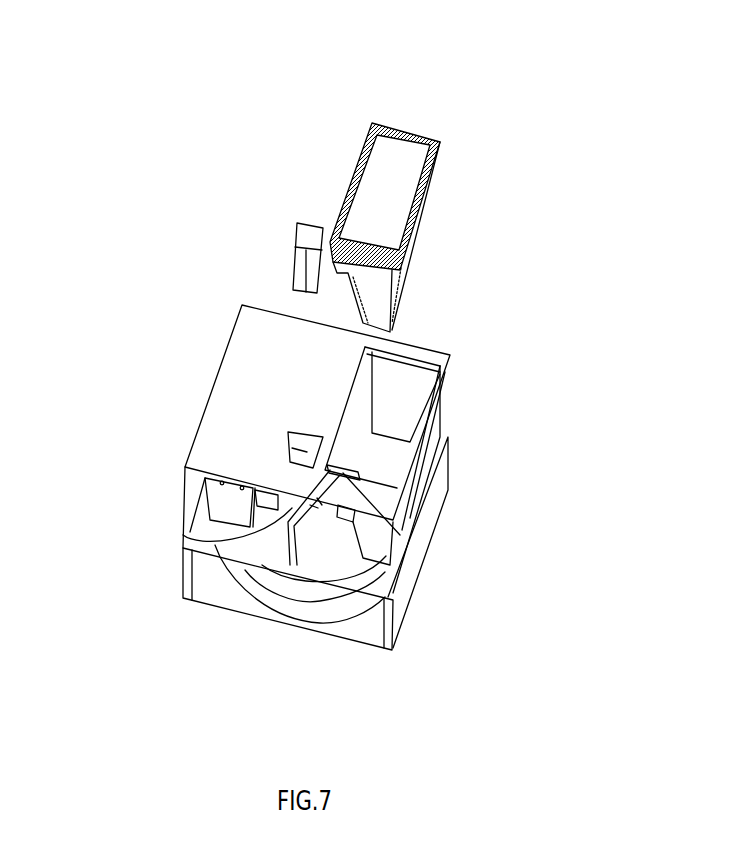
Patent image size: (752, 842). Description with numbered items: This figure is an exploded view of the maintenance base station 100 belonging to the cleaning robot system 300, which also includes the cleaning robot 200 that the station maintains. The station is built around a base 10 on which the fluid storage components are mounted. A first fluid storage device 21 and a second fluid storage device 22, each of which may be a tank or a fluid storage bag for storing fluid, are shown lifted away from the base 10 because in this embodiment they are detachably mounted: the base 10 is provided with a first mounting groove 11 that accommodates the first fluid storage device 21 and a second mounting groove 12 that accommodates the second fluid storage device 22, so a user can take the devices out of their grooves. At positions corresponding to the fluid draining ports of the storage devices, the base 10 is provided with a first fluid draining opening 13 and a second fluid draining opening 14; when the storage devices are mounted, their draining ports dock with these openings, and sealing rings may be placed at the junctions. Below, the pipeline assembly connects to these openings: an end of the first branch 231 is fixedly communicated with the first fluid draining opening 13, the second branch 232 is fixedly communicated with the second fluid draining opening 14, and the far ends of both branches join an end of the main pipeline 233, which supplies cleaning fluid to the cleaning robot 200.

The cleaning robot system 300 is at (514, 146).
The first fluid storage device 21 is at (382, 158).
The second fluid storage device 22 is at (293, 267).
The base 10 is at (203, 445).
The first mounting groove 11 is at (410, 397).
The second mounting groove 12 is at (297, 447).
The first fluid draining opening 13 is at (290, 548).
The second fluid draining opening 14 is at (400, 535).
The maintenance base station 100 is at (440, 500).
The cleaning robot 200 is at (273, 598).
The first branch 231 is at (300, 512).
The second branch 232 is at (317, 498).
The main pipeline 233 is at (315, 505).